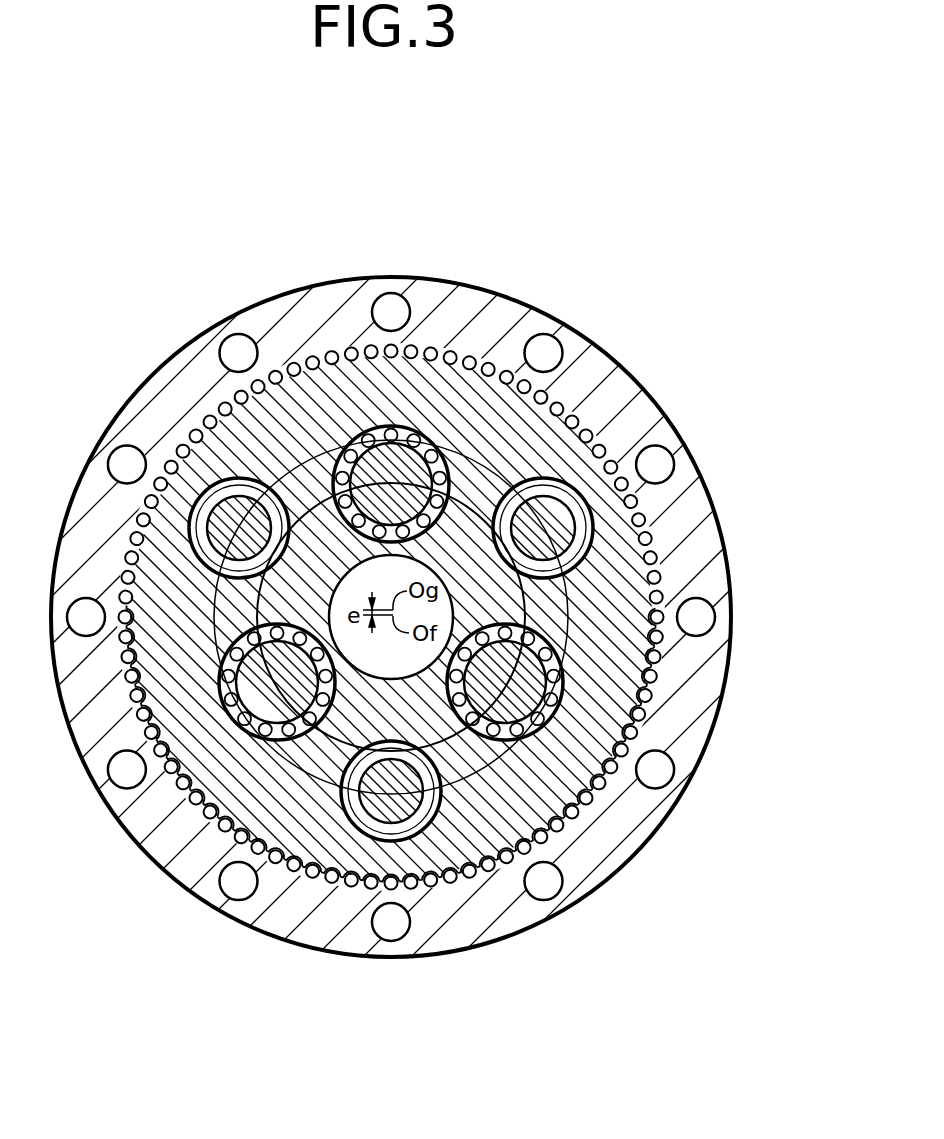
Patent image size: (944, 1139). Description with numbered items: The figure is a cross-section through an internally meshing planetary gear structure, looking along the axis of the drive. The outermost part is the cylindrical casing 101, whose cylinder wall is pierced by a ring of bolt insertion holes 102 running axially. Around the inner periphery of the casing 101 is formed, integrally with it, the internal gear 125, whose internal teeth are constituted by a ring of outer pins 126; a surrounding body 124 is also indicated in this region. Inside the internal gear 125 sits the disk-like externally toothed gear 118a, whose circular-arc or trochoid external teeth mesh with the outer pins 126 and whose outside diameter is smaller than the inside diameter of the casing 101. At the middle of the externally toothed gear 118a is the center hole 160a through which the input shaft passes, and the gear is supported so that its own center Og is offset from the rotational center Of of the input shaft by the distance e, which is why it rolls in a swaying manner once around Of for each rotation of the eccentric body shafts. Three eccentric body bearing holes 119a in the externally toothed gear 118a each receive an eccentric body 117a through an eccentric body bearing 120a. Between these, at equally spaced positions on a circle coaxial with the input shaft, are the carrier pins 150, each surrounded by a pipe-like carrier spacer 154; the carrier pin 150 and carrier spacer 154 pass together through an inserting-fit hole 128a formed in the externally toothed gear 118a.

The cylindrical casing 101 is at (347, 279).
The bolt insertion holes 102 is at (414, 300).
The eccentric body 117a is at (245, 722).
The externally toothed gear 118a is at (530, 423).
The eccentric body bearing hole 119a is at (368, 842).
The eccentric body bearing 120a is at (284, 740).
The internal gear body 124 is at (708, 600).
The internal gear 125 is at (595, 447).
The outer pins 126 is at (613, 436).
The inserting-fit hole 128a is at (655, 650).
The carrier pins 150 is at (575, 540).
The carrier spacers 154 is at (548, 520).
The center hole 160a is at (577, 847).